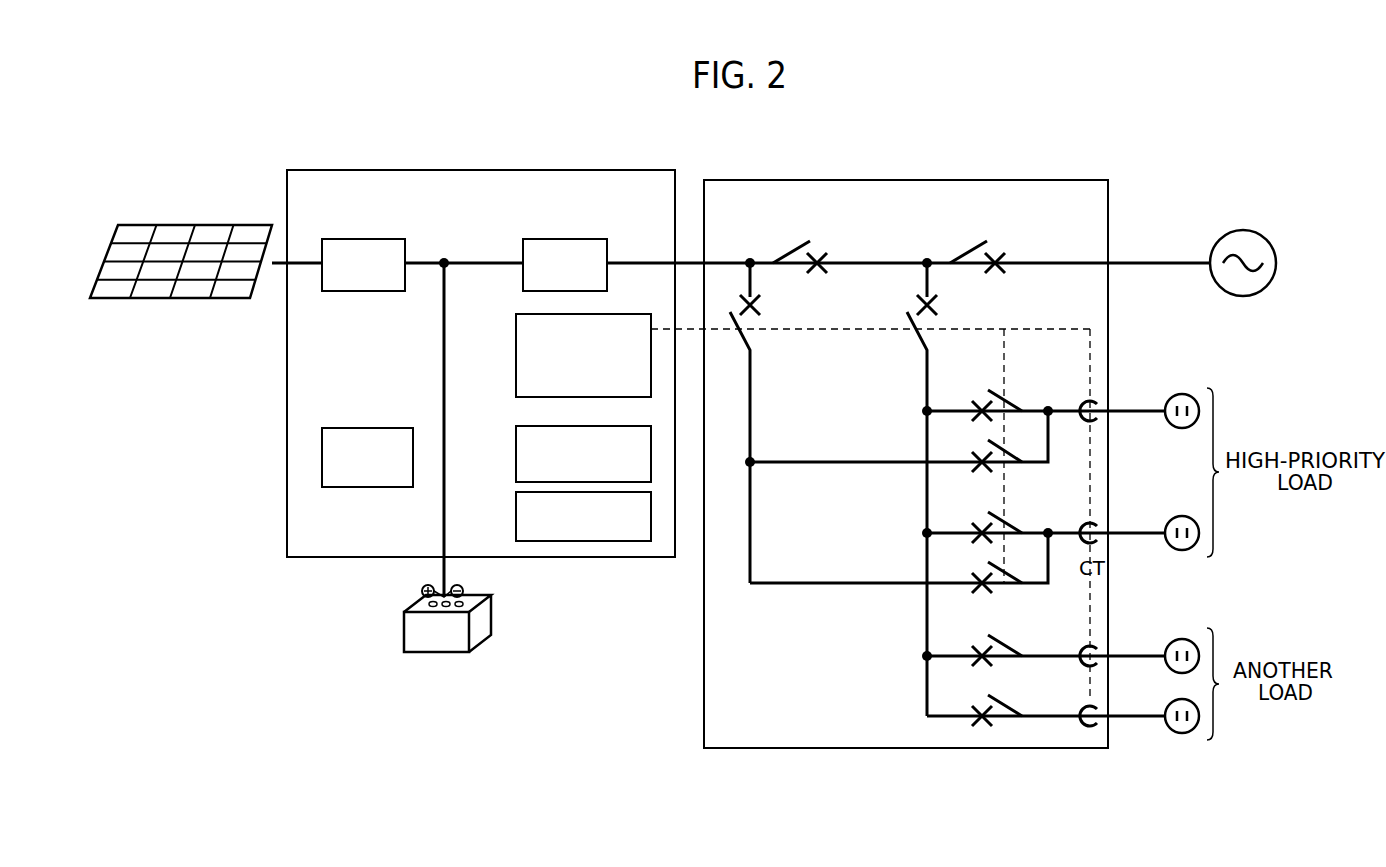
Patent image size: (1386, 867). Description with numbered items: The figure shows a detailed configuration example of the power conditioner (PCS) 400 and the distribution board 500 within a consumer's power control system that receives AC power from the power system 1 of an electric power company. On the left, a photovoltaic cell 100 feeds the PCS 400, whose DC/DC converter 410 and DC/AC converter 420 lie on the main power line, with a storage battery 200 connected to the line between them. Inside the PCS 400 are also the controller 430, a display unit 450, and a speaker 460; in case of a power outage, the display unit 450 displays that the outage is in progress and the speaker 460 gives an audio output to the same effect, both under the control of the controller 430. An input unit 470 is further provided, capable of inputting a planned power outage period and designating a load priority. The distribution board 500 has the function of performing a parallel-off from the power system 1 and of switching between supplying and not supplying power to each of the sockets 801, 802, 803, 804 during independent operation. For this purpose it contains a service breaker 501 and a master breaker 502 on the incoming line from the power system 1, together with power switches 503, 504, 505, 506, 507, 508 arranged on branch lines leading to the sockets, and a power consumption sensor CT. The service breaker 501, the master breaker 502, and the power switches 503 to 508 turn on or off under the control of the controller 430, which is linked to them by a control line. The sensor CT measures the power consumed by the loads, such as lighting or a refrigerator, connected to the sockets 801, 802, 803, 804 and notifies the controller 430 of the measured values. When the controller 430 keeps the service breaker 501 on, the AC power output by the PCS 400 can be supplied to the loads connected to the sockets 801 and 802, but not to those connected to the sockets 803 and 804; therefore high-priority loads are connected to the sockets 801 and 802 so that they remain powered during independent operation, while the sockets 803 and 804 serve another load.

The power system 1 is at (1245, 230).
The photovoltaic cell 100 is at (180, 223).
The storage battery 200 is at (404, 630).
The power conditioner 400 is at (545, 149).
The DC/DC converter 410 is at (380, 219).
The DC/AC converter 420 is at (580, 219).
The controller 430 is at (516, 352).
The display unit 450 is at (516, 443).
The speaker 460 is at (516, 515).
The input unit 470 is at (380, 404).
The distribution board 500 is at (1047, 179).
The service breaker 501 is at (745, 323).
The master breaker 502 is at (922, 323).
The power switch 503 is at (1008, 398).
The power switch 504 is at (997, 455).
The power switch 505 is at (1008, 521).
The power switch 506 is at (997, 577).
The power switch 507 is at (1008, 645).
The power switch 508 is at (1008, 705).
The socket 801 is at (1170, 397).
The socket 802 is at (1170, 519).
The socket 803 is at (1170, 639).
The socket 804 is at (1170, 703).